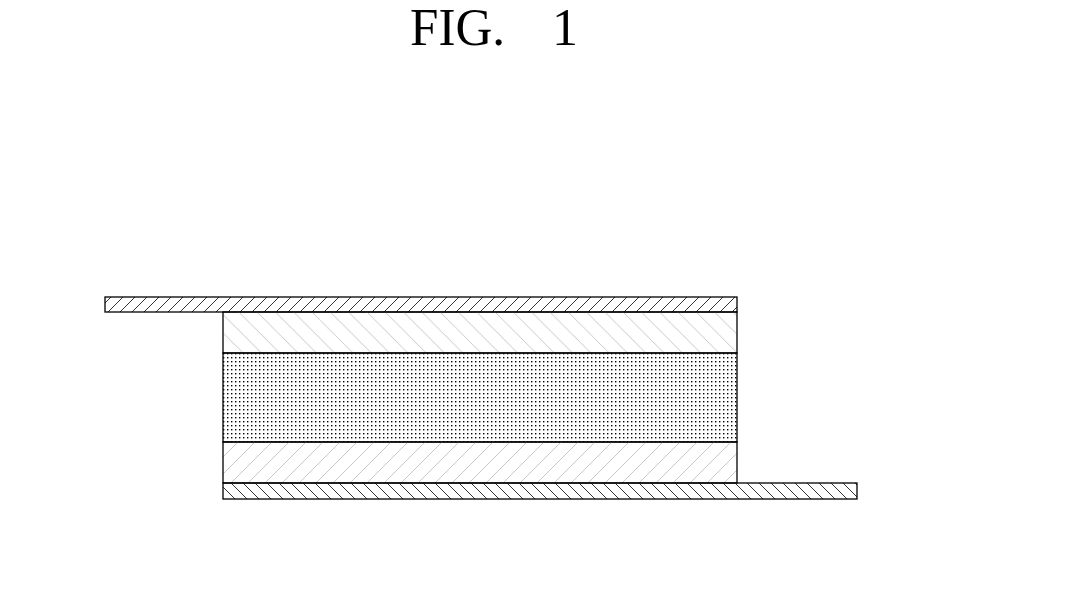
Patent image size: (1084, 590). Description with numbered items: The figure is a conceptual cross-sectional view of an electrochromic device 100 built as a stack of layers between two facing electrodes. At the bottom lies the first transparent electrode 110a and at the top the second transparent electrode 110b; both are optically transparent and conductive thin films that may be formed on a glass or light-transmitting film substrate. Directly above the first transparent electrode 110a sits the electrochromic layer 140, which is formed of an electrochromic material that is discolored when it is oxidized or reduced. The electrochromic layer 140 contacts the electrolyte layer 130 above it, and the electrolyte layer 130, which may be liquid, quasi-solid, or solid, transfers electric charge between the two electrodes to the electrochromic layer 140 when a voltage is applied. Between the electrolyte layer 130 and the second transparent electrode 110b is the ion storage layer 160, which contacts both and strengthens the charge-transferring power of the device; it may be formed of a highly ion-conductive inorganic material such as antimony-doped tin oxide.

The electrochromic device 100 is at (121, 258).
The first transparent electrode 110a is at (857, 491).
The second transparent electrode 110b is at (737, 301).
The electrolyte layer 130 is at (737, 389).
The electrochromic layer 140 is at (737, 462).
The ion storage layer 160 is at (737, 332).